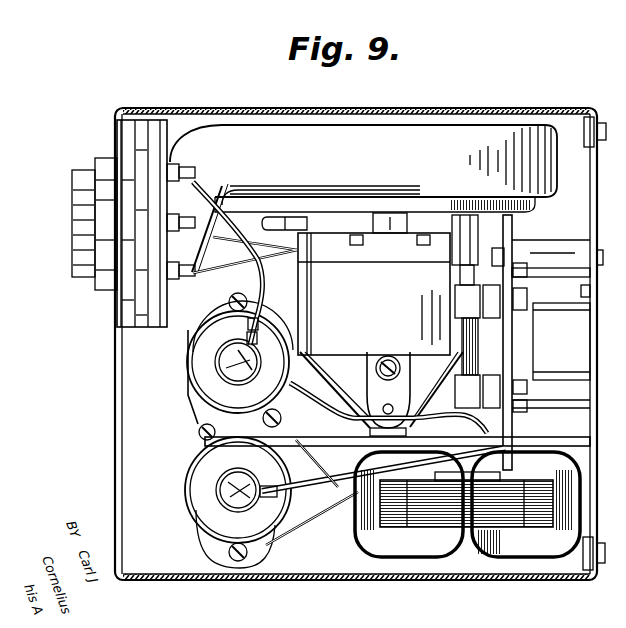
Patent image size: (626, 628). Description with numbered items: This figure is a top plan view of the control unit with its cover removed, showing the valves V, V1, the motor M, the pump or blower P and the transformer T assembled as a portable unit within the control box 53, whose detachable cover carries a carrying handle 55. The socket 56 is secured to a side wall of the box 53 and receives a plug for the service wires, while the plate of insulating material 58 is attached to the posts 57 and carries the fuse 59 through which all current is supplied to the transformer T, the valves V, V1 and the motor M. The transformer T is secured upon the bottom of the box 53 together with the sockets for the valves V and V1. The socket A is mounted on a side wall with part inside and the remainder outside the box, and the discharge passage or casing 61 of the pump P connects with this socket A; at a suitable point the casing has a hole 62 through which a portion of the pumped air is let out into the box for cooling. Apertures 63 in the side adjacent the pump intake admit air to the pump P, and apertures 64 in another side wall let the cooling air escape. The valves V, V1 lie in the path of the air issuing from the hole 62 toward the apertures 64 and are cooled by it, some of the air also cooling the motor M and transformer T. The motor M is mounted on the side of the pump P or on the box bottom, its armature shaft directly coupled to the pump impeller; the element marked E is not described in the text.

The control box 53 is at (116, 455).
The carrying handle 55 is at (592, 463).
The apertures 63 is at (300, 109).
The apertures 64 is at (265, 580).
The socket A is at (134, 148).
The pump or blower P is at (363, 168).
The discharge passage or casing 61 is at (220, 150).
The hole 62 is at (197, 245).
The motor M is at (374, 294).
The electrical connector E is at (346, 228).
The fuse 59 is at (470, 338).
The plate of insulating material 58 is at (506, 342).
The posts 57 is at (552, 256).
The socket 56 is at (576, 340).
The valve V is at (200, 356).
The valve V1 is at (197, 500).
The transformer T is at (464, 527).